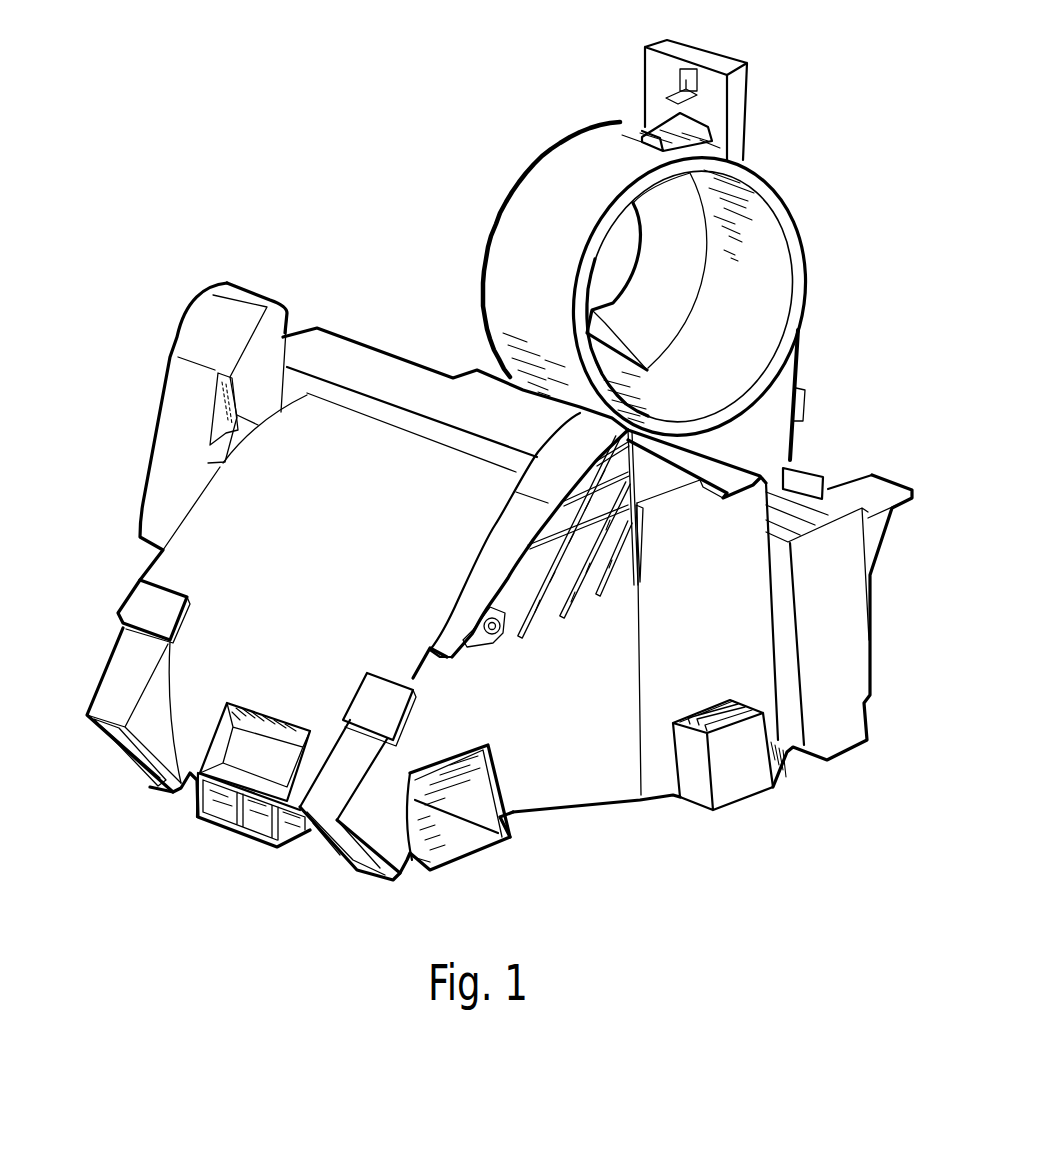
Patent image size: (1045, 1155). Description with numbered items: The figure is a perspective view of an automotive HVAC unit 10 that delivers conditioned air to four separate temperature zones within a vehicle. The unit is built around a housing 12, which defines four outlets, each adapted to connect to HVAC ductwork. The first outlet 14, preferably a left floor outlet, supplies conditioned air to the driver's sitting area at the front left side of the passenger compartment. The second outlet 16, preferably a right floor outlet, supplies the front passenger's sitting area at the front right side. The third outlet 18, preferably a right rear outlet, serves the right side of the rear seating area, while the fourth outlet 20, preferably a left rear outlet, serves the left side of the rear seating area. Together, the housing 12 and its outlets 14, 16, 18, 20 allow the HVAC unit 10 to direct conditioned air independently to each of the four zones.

The HVAC unit 10 is at (478, 554).
The housing 12 is at (478, 485).
The first outlet 14 is at (133, 770).
The second outlet 16 is at (343, 850).
The third outlet 18 is at (263, 823).
The fourth outlet 20 is at (205, 812).